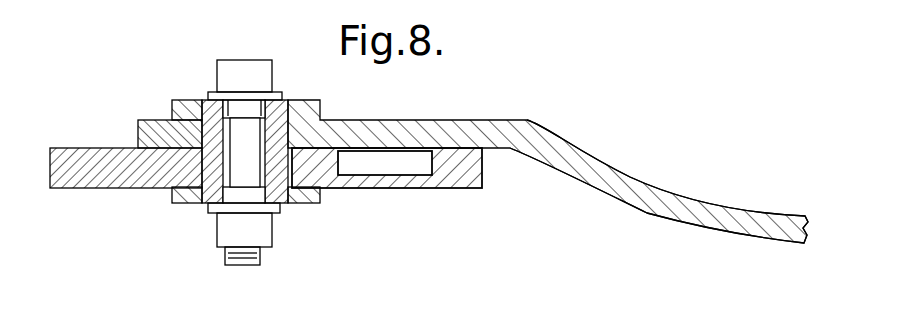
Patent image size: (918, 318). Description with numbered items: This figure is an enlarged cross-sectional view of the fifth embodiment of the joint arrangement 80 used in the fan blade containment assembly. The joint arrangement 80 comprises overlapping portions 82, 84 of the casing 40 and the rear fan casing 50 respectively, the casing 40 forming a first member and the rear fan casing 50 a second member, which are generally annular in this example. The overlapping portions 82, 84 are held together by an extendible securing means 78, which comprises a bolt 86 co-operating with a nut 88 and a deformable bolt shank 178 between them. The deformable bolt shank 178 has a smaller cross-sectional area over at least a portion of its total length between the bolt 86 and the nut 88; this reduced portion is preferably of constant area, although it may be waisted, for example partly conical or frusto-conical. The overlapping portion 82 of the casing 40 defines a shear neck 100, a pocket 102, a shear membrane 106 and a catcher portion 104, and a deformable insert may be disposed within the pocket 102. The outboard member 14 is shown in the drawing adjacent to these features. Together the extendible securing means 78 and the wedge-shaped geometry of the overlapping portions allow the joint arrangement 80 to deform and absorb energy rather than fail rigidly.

The mounting member 14 is at (428, 159).
The casing 40 is at (90, 148).
The rear fan casing 50 is at (680, 183).
The extendible securing means 78 is at (240, 137).
The joint arrangement 80 is at (490, 150).
The overlapping portion 82 is at (122, 141).
The overlapping portion 84 is at (350, 114).
The bolt 86 is at (262, 77).
The nut 88 is at (227, 230).
The shear neck 100 is at (323, 163).
The pocket 102 is at (412, 155).
The catcher portion 104 is at (482, 163).
The shear membrane 106 is at (408, 180).
The deformable bolt shank 178 is at (222, 130).